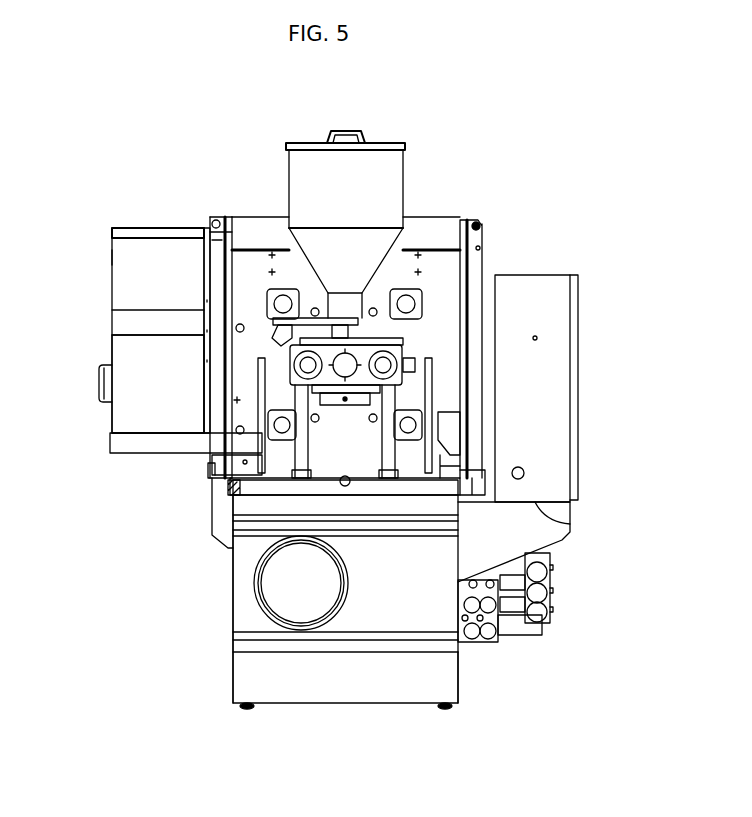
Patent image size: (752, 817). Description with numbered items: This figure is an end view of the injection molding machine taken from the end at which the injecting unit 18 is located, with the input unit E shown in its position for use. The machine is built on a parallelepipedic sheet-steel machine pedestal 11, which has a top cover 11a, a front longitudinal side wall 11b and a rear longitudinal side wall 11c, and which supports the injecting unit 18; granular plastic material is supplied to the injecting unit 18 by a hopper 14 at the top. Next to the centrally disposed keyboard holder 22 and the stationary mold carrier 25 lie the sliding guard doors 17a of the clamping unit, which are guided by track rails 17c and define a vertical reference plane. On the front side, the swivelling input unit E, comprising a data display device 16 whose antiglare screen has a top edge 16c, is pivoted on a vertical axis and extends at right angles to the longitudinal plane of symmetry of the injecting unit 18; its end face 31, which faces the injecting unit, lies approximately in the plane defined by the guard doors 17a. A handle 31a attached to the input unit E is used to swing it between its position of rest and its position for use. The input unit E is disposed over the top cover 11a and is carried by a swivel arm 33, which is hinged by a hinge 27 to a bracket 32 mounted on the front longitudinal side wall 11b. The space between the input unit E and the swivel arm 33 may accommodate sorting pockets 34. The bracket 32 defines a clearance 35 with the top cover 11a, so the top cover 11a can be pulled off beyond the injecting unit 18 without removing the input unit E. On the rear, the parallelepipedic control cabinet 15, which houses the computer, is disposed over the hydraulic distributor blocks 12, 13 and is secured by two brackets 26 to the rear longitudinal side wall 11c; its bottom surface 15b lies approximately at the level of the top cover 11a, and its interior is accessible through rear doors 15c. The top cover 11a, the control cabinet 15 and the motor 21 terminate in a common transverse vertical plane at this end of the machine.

The machine pedestal 11 is at (355, 708).
The top cover 11a is at (243, 487).
The front longitudinal side wall 11b is at (232, 590).
The rear longitudinal side wall 11c is at (459, 676).
The hydraulic distributor block 12 is at (550, 591).
The hydraulic distributor block 13 is at (496, 642).
The hopper 14 is at (353, 195).
The control cabinet 15 is at (548, 404).
The bottom surface 15b is at (572, 525).
The doors 15c is at (577, 345).
The data display device 16 is at (170, 289).
The top edge 16c is at (152, 228).
The sliding guard doors 17a is at (212, 217).
The track rails 17c is at (479, 222).
The injecting unit 18 is at (402, 345).
The motor 21 is at (313, 594).
The keyboard holder 22 is at (229, 238).
The stationary mold carrier 25 is at (436, 262).
The brackets 26 is at (506, 545).
The hinge 27 is at (222, 455).
The end face 31 is at (203, 387).
The handle 31a is at (99, 383).
The bracket 32 is at (222, 530).
The swivel arm 33 is at (125, 446).
The sorting pockets 34 is at (166, 370).
The clearance 35 is at (210, 473).
The input unit E is at (112, 258).